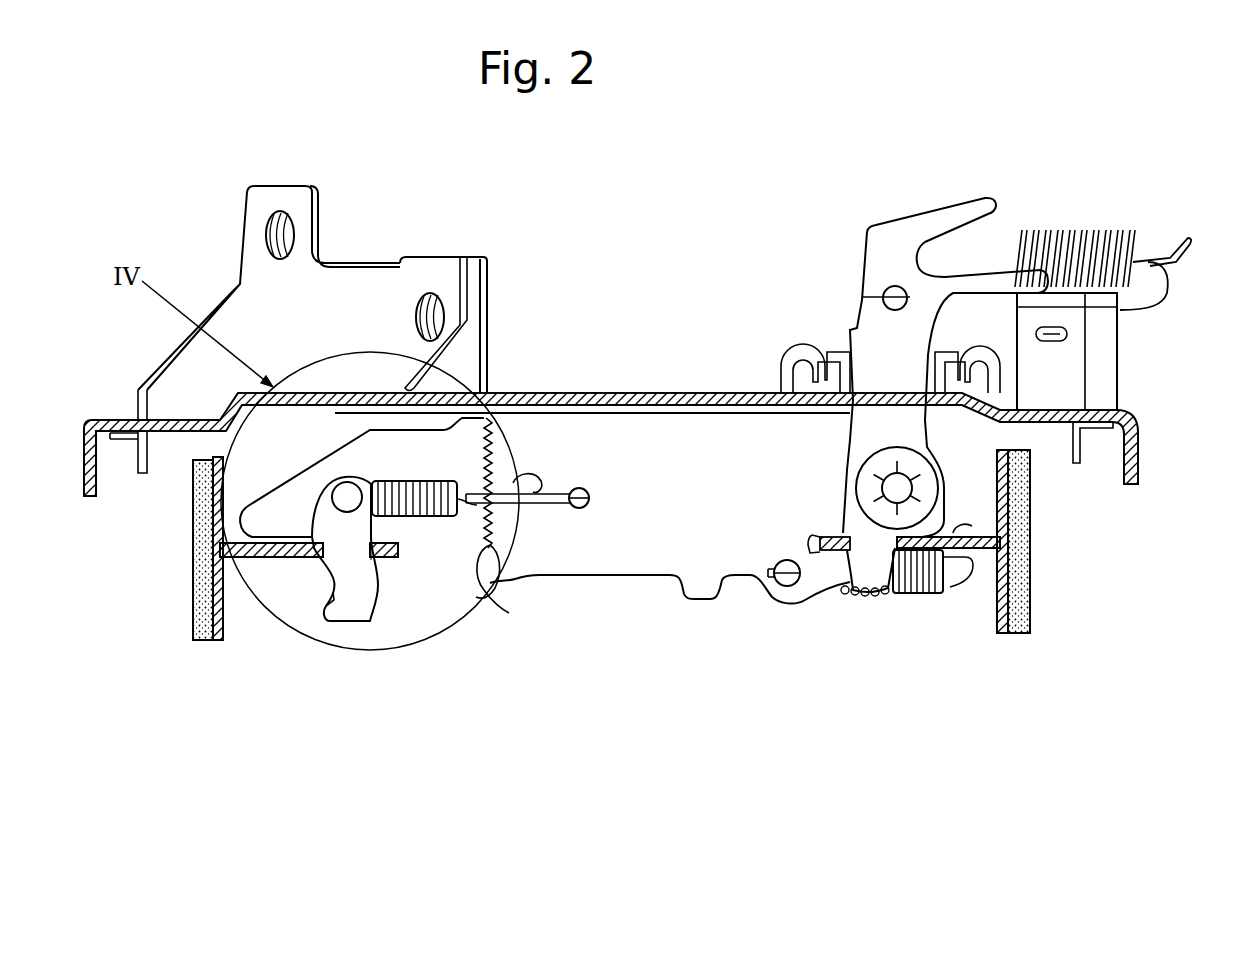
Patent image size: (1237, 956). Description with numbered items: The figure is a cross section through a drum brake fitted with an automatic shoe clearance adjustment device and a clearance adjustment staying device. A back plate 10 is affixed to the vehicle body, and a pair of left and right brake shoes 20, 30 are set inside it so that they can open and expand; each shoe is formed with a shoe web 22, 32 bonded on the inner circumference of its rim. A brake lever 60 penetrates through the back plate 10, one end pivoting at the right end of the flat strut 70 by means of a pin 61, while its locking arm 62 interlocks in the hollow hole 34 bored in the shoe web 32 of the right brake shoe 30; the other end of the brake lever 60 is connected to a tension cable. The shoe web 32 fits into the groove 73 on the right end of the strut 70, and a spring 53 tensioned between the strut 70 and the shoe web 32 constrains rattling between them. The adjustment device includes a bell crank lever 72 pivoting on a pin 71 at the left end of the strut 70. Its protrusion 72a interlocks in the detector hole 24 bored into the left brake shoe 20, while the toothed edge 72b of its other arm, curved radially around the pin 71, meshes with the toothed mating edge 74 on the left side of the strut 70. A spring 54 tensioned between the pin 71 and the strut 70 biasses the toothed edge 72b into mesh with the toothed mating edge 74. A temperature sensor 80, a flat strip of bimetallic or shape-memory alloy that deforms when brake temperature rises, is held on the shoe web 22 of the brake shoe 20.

The back plate 10 is at (607, 393).
The brake shoe 20 is at (187, 577).
The shoe web 22 is at (257, 560).
The detector hole 24 is at (370, 565).
The brake shoe 30 is at (1040, 581).
The shoe web 32 is at (980, 557).
The hollow hole 34 is at (853, 594).
The spring 53 is at (930, 595).
The spring 54 is at (437, 522).
The brake lever 60 is at (883, 224).
The pin 61 is at (903, 484).
The locking arm 62 is at (890, 595).
The strut 70 is at (623, 557).
The pin 71 is at (343, 481).
The bell crank lever 72 is at (387, 442).
The protrusion 72a is at (323, 621).
The toothed edge 72b is at (507, 408).
The groove 73 is at (850, 581).
The toothed mating edge 74 is at (500, 586).
The temperature sensor 80 is at (393, 566).